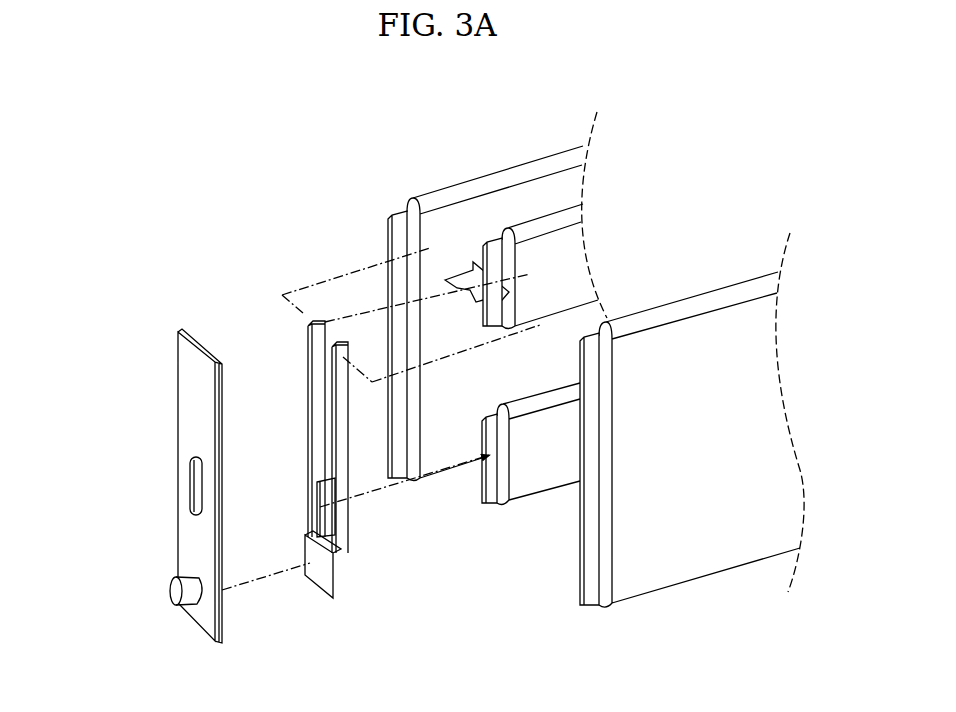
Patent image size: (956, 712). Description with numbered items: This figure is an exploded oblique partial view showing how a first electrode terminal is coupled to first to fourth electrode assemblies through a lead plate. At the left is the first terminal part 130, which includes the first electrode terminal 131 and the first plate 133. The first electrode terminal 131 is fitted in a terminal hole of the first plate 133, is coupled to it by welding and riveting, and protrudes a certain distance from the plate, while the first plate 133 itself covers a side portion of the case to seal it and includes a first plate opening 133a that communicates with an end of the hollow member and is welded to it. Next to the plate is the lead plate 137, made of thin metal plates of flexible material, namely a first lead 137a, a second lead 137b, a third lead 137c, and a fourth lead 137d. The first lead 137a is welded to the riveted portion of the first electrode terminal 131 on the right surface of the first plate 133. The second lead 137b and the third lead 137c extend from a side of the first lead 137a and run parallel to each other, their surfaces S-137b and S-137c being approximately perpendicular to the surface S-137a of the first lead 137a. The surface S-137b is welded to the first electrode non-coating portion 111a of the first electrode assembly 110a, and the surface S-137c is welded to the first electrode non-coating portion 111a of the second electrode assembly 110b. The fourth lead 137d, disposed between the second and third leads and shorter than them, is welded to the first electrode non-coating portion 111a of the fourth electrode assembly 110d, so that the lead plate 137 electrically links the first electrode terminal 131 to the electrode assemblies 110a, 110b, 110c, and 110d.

The first electrode assembly 110a is at (664, 306).
The second electrode assembly 110b is at (474, 191).
The third electrode assembly 110c is at (552, 214).
The fourth electrode assembly 110d is at (556, 498).
The first electrode non-coating portion 111a is at (398, 216).
The first terminal part 130 is at (147, 487).
The first electrode terminal 131 is at (170, 597).
The first plate 133 is at (184, 386).
The first plate opening 133a is at (193, 493).
The lead plate 137 is at (326, 482).
The first lead 137a is at (317, 590).
The second lead 137b is at (350, 540).
The third lead 137c is at (318, 455).
The fourth lead 137d is at (325, 500).
The surface of the first lead S-137a is at (308, 570).
The surface of the second lead S-137b is at (376, 472).
The surface of the third lead S-137c is at (312, 352).